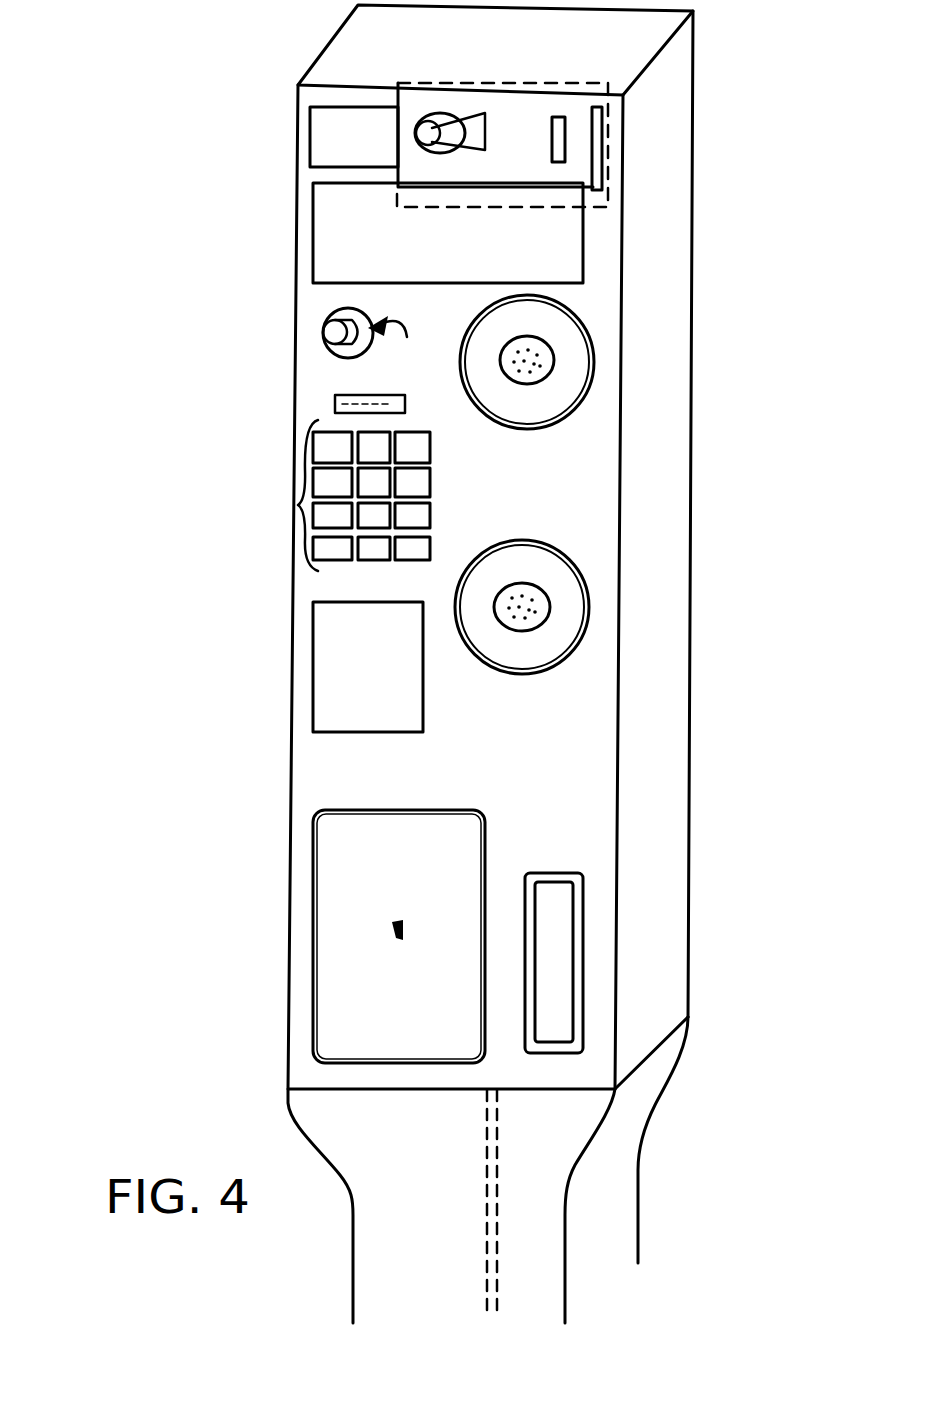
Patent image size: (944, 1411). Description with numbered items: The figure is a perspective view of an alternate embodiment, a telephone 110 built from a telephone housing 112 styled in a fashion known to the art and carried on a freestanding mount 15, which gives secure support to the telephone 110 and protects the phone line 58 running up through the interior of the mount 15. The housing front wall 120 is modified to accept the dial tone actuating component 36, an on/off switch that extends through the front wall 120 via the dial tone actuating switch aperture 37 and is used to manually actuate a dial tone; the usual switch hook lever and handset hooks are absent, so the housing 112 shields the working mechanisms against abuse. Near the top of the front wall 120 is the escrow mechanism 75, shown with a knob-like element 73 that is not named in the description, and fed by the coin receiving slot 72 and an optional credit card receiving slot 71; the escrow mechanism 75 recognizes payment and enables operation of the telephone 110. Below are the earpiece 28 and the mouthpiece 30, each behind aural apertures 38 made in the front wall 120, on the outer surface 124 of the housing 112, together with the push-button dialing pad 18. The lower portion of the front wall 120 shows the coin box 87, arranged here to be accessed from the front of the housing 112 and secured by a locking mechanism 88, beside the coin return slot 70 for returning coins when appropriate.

The telephone 110 is at (268, 172).
The telephone housing 112 is at (646, 246).
The freestanding mount 15 is at (612, 1182).
The phone line 58 is at (482, 1152).
The housing front wall 120 is at (328, 770).
The escrow mechanism 75 is at (470, 193).
The rotary knob 73 is at (440, 112).
The coin receiving slot 72 is at (552, 128).
The credit card receiving slot 71 is at (600, 100).
The dial tone actuating component 36 is at (335, 330).
The dial tone actuating switch aperture 37 is at (402, 353).
The push-button dialing pad 18 is at (300, 509).
The earpiece 28 is at (557, 393).
The aural apertures 38 is at (487, 420).
The outer surface 124 is at (517, 531).
The mouthpiece 30 is at (563, 638).
The coin box 87 is at (342, 997).
The locking mechanism 88 is at (395, 928).
The coin return slot 70 is at (558, 987).